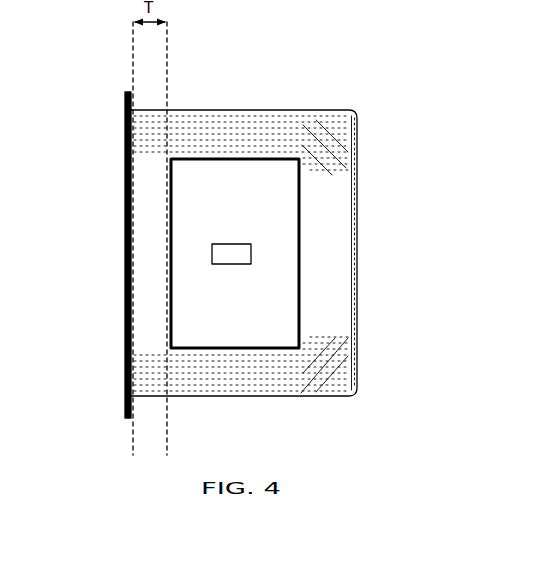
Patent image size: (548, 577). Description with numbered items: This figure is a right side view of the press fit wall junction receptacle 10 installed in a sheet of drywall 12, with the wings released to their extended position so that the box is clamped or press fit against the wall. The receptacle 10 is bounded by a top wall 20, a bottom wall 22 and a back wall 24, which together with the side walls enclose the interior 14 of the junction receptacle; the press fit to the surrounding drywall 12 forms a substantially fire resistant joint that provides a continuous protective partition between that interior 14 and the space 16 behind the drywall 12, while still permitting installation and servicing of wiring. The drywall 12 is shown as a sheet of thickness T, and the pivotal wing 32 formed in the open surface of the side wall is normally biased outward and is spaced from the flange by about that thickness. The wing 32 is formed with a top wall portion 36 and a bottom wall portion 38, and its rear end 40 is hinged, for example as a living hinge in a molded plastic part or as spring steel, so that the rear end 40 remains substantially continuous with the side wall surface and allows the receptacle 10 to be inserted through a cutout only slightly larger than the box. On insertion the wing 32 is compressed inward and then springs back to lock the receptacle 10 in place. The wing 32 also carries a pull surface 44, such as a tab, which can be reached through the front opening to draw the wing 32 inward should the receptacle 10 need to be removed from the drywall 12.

The junction receptacle 10 is at (275, 241).
The drywall 12 is at (135, 441).
The interior of the junction receptacle 14 is at (123, 158).
The space behind the drywall 16 is at (197, 81).
The top wall 20 is at (250, 110).
The bottom wall 22 is at (228, 398).
The back wall 24 is at (357, 247).
The pivotal wing 32 is at (193, 305).
The top wall portion 36 is at (254, 158).
The bottom wall portion 38 is at (244, 350).
The rear end of wing 40 is at (305, 318).
The pull surface 44 is at (251, 251).